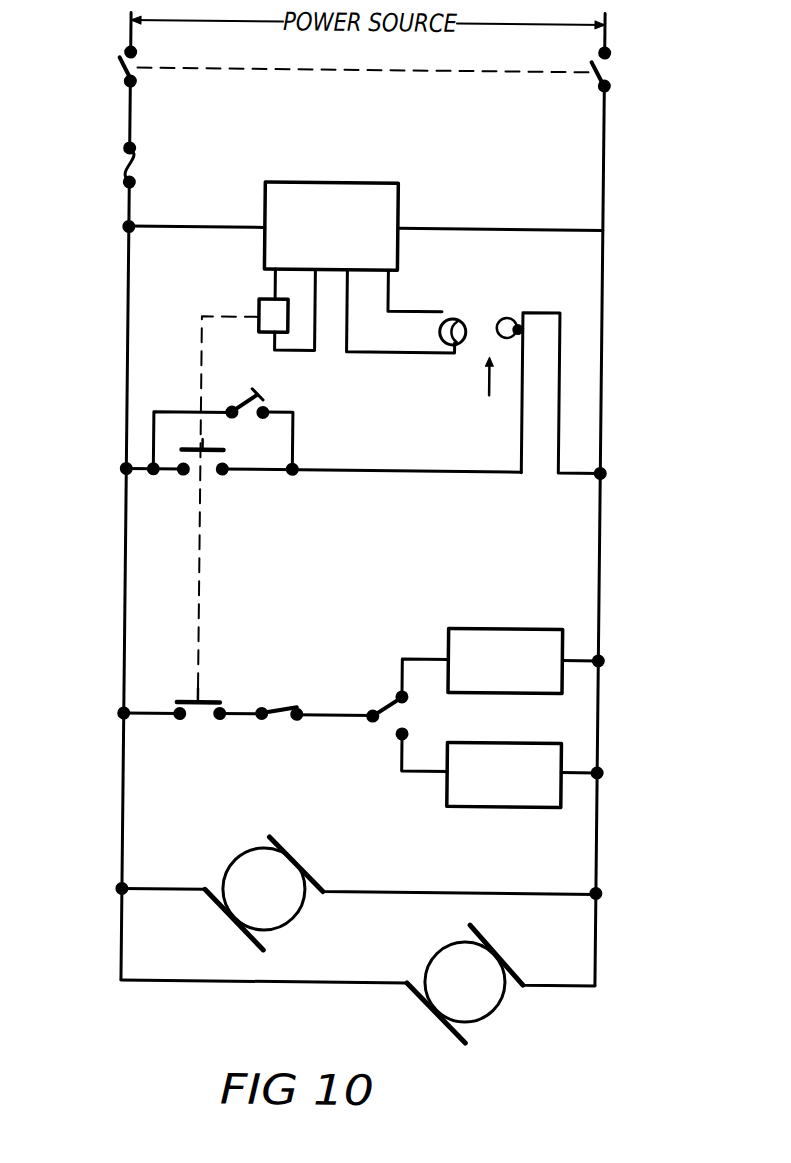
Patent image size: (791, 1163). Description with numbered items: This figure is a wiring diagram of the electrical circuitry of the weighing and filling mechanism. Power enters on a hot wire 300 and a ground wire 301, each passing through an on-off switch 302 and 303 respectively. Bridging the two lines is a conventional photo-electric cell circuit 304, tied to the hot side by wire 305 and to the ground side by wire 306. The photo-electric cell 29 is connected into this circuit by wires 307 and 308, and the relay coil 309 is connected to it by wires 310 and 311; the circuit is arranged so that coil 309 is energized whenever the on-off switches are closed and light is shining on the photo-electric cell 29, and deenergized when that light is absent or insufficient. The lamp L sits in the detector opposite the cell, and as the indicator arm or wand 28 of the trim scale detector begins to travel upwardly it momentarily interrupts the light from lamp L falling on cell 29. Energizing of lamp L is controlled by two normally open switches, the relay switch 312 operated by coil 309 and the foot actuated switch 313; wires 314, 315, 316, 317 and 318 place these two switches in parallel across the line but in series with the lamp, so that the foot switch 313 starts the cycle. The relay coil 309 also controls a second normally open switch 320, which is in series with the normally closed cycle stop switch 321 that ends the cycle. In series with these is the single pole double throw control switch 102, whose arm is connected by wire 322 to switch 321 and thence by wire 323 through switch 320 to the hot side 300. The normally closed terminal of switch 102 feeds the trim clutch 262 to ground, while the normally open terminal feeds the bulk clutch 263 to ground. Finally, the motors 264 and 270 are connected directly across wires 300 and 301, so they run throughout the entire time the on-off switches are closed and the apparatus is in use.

The hot wire 300 is at (124, 304).
The ground wire 301 is at (600, 366).
The on-off switch 302 is at (115, 67).
The on-off switch 303 is at (603, 69).
The photo-electric cell circuit 304 is at (329, 183).
The wire 305 is at (226, 226).
The wire 306 is at (542, 228).
The wire 307 is at (396, 308).
The wire 308 is at (374, 353).
The relay coil 309 is at (257, 310).
The wire 310 is at (271, 283).
The wire 311 is at (290, 352).
The relay switch 312 is at (205, 458).
The foot actuated switch 313 is at (245, 396).
The wire 314 is at (138, 473).
The wire 315 is at (178, 413).
The wire 316 is at (294, 445).
The wire 317 is at (382, 473).
The wire 318 is at (560, 450).
The second normally open switch 320 is at (211, 700).
The cycle stop switch 321 is at (290, 708).
The wire 322 is at (308, 718).
The wire 323 is at (249, 717).
The photo-electric cell 29 is at (438, 335).
The lamp L is at (501, 317).
The indicator arm 28 is at (483, 381).
The bulk clutch 263 is at (482, 628).
The trim clutch 262 is at (478, 742).
The control switch 102 is at (405, 706).
The motor 264 is at (292, 874).
The motor 270 is at (495, 964).